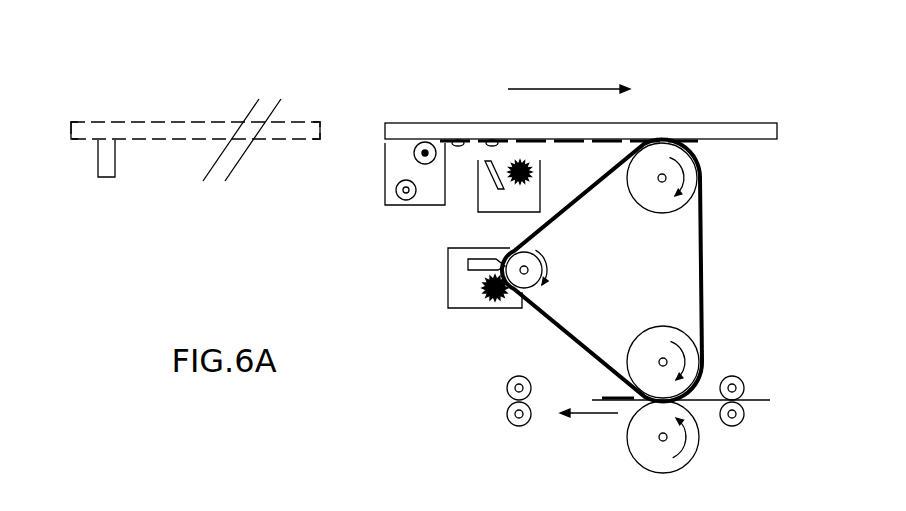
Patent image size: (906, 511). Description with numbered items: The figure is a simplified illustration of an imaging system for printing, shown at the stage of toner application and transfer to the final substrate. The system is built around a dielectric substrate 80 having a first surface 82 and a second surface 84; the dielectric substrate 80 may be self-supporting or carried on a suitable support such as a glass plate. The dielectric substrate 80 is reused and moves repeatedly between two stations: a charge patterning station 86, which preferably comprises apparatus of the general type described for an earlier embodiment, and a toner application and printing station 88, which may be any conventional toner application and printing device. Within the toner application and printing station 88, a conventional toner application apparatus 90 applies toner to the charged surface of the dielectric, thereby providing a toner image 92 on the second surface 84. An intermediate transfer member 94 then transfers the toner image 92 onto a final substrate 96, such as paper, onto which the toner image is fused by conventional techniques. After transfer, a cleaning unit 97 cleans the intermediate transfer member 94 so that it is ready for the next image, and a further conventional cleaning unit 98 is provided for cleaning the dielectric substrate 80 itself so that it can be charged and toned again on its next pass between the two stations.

The dielectric substrate 80 is at (728, 128).
The first surface 82 is at (145, 122).
The second surface 84 is at (169, 140).
The charge patterning station 86 is at (195, 112).
The toner application and printing station 88 is at (552, 58).
The toner application apparatus 90 is at (427, 205).
The toner image 92 is at (485, 137).
The intermediate transfer member 94 is at (562, 328).
The final substrate 96 is at (705, 400).
The cleaning unit 97 is at (463, 298).
The cleaning unit 98 is at (530, 198).